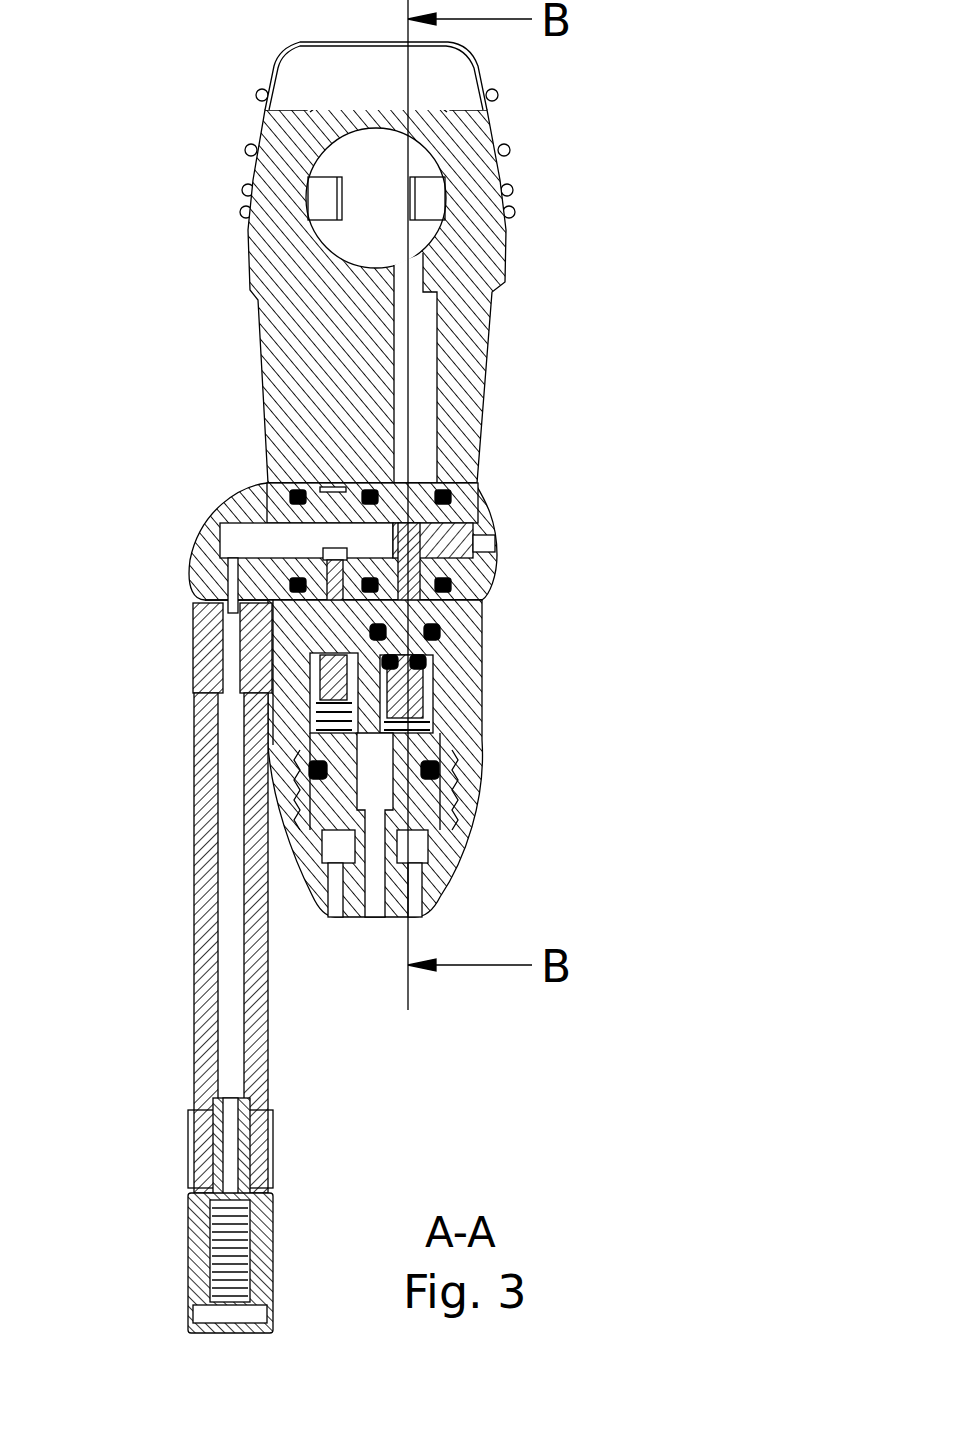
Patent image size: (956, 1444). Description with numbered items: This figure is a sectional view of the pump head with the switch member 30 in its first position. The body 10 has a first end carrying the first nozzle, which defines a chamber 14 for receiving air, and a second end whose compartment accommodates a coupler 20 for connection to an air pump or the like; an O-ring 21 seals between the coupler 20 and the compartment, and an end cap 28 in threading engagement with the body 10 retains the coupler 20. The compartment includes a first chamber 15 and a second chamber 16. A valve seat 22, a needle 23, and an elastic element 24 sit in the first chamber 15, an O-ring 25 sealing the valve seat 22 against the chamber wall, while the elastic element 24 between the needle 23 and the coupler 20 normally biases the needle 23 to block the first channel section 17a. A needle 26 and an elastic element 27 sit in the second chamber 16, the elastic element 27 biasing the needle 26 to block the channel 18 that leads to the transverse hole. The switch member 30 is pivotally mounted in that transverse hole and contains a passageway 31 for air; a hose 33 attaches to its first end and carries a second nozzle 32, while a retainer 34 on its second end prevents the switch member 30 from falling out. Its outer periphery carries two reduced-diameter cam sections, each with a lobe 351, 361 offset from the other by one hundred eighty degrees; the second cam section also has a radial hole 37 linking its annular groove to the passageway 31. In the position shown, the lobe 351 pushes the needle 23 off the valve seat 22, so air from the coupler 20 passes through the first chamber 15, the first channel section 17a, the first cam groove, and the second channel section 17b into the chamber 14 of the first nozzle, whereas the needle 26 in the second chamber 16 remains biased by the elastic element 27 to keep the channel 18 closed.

The body 10 is at (300, 81).
The chamber 14 is at (355, 158).
The second channel section 17b is at (420, 360).
The lobe 361 is at (300, 492).
The passageway 31 is at (328, 528).
The radial hole 37 is at (335, 556).
The switch member 30 is at (197, 567).
The channel 18 is at (323, 612).
The needle 26 is at (323, 633).
The second chamber 16 is at (353, 692).
The elastic element 27 is at (355, 720).
The hose 33 is at (200, 815).
The second nozzle 32 is at (196, 1250).
The retainer 34 is at (492, 523).
The lobe 351 is at (490, 550).
The valve seat 22 is at (465, 590).
The first channel section 17a is at (455, 610).
The O-ring 25 is at (440, 633).
The needle 23 is at (425, 660).
The first chamber 15 is at (425, 698).
The elastic element 24 is at (465, 757).
The O-ring 21 is at (455, 780).
The coupler 20 is at (453, 817).
The end cap 28 is at (447, 860).